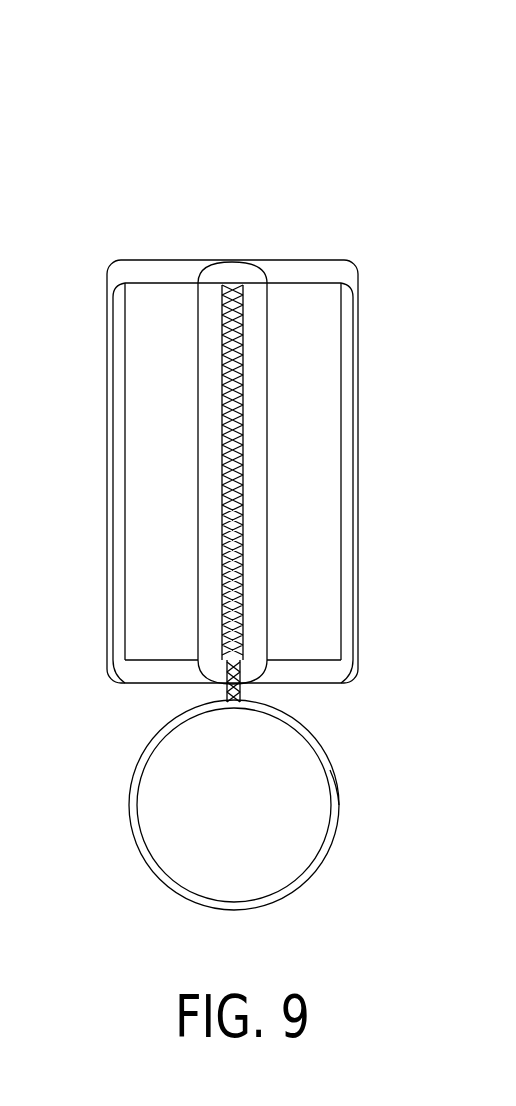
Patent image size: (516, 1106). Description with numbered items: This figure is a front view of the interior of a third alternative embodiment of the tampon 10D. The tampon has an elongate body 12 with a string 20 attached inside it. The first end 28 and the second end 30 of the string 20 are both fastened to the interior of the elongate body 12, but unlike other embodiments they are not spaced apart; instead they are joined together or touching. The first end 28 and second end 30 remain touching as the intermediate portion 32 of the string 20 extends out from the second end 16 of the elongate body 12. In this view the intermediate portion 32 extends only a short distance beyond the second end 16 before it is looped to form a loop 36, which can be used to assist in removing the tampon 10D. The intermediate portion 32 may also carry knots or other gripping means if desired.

The tampon 10D is at (207, 153).
The elongate body 12 is at (355, 443).
The second end of the elongate body 16 is at (283, 668).
The string 20 is at (130, 812).
The first end of the string 28 is at (240, 287).
The second end of the string 30 is at (222, 287).
The intermediate portion of the string 32 is at (227, 681).
The loop 36 is at (352, 797).